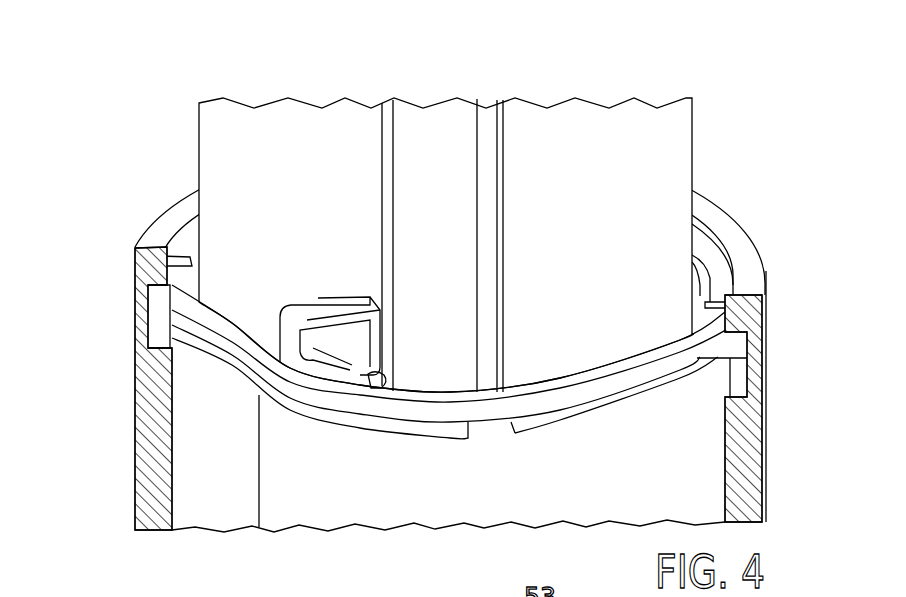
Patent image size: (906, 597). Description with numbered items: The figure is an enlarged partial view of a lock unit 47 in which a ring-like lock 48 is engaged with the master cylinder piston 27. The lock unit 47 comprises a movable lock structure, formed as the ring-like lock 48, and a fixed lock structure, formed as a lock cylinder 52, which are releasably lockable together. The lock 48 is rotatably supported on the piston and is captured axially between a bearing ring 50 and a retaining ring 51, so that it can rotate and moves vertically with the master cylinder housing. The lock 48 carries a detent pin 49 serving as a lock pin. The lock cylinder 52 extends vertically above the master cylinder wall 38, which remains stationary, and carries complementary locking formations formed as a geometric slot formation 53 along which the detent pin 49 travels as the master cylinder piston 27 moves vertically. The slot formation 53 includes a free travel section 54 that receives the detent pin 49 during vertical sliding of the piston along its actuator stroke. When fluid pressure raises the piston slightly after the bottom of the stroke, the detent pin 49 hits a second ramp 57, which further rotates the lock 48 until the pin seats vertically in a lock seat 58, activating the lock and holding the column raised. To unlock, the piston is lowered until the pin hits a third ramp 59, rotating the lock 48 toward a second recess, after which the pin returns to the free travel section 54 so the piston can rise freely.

The master cylinder piston 27 is at (109, 349).
The master cylinder wall 38 is at (748, 418).
The lock unit 47 is at (212, 432).
The ring-like lock 48 is at (458, 313).
The detent pin 49 is at (380, 388).
The bearing ring 50 is at (152, 333).
The retaining ring 51 is at (200, 214).
The lock cylinder 52 is at (482, 211).
The slot formation 53 is at (393, 113).
The free travel section 54 is at (388, 163).
The second ramp 57 is at (352, 366).
The lock seat 58 is at (304, 414).
The third ramp 59 is at (348, 364).